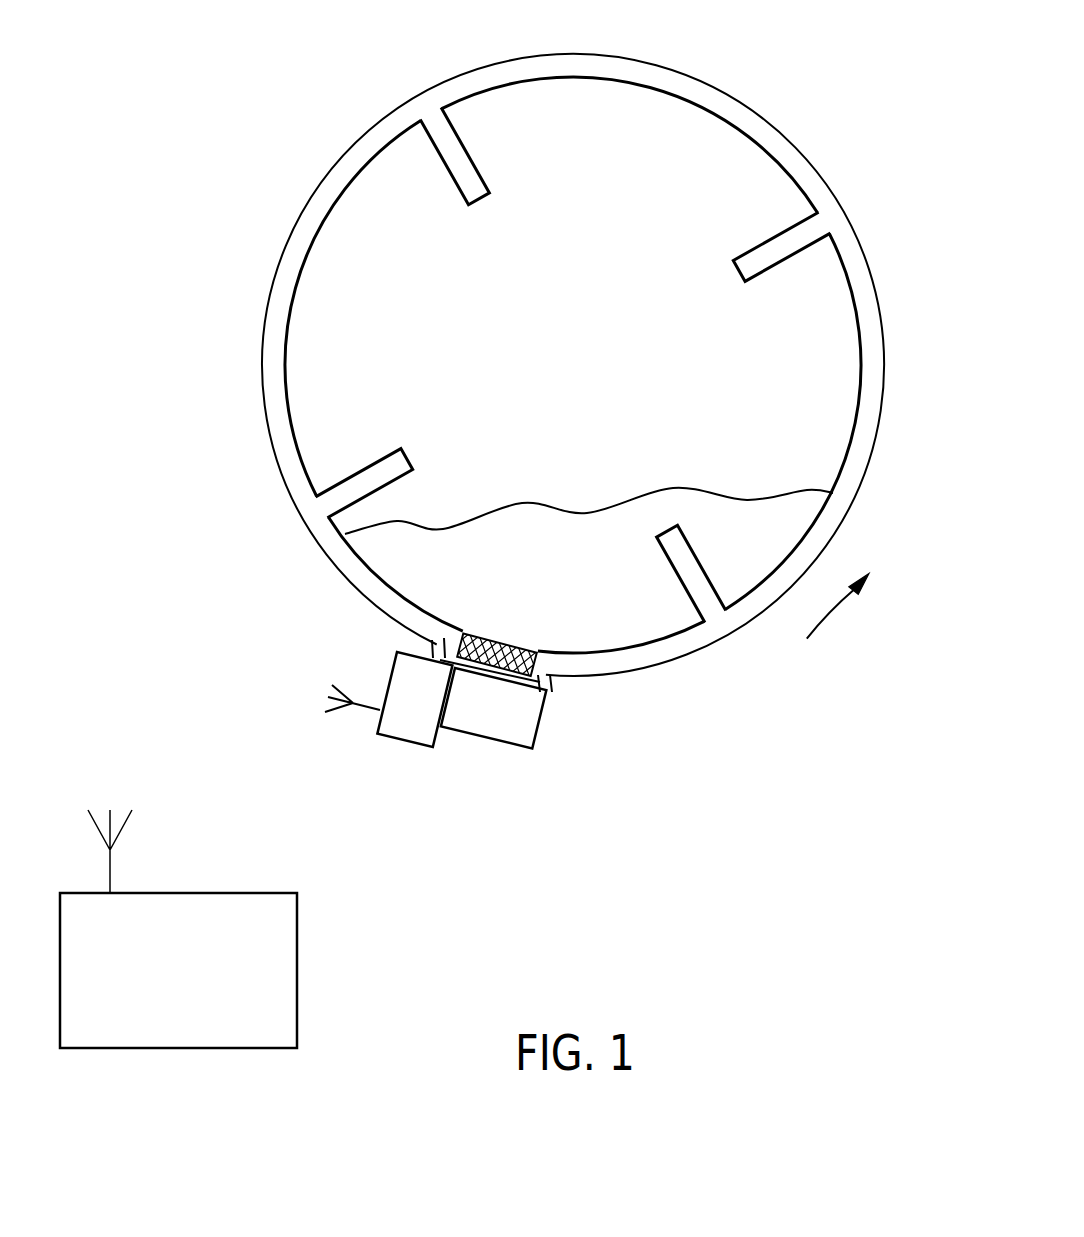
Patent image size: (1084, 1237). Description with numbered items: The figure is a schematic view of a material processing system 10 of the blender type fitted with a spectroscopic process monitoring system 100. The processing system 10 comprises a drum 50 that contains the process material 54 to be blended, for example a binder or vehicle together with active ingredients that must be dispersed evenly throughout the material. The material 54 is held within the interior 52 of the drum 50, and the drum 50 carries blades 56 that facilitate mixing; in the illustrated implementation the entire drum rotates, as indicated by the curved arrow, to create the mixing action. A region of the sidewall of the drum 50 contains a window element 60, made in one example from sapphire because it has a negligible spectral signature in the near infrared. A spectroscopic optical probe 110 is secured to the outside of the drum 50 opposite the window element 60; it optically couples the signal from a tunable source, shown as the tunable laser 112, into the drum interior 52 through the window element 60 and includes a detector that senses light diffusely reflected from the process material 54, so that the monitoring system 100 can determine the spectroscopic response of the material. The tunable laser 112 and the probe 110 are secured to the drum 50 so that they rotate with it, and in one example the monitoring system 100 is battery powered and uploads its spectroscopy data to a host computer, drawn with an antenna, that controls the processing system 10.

The material processing system 10 is at (237, 203).
The drum 50 is at (722, 90).
The interior of the drum 52 is at (750, 202).
The process material 54 is at (783, 527).
The blades 56 is at (788, 260).
The window element 60 is at (500, 637).
The process monitoring system 100 is at (573, 735).
The spectroscopic optical probe 110 is at (487, 738).
The tunable laser 112 is at (403, 743).